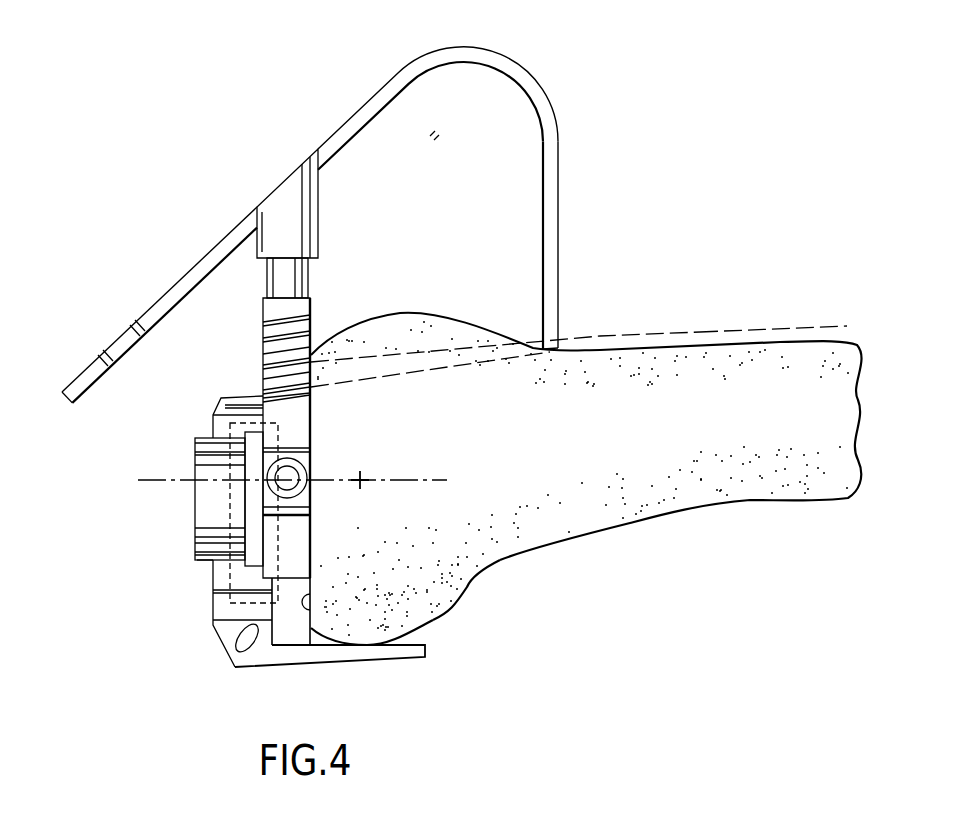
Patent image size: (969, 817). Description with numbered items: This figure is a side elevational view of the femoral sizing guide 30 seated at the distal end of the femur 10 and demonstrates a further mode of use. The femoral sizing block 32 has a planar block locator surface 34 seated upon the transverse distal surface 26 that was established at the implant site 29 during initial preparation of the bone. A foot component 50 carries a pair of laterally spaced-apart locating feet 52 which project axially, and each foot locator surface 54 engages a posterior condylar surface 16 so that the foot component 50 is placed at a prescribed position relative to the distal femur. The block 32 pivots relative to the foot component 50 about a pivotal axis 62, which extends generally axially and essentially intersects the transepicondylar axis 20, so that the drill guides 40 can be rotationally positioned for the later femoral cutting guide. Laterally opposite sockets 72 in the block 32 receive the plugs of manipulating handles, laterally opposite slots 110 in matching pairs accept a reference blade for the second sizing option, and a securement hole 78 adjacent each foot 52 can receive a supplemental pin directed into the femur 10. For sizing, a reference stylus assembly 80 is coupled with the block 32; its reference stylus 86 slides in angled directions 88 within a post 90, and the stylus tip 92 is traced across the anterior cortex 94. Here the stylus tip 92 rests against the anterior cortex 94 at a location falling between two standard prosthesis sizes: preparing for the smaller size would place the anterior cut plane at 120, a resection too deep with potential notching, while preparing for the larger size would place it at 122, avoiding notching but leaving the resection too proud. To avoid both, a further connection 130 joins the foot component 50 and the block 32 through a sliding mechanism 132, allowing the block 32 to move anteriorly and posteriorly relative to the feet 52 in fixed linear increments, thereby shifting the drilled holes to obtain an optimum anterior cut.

The femur 10 is at (800, 500).
The posterior condylar surfaces 16 is at (378, 648).
The transepicondylar axis 20 is at (361, 476).
The distal surface 26 is at (310, 598).
The implant site 29 is at (302, 638).
The femoral sizing guide 30 is at (190, 530).
The femoral sizing block 32 is at (314, 298).
The block locator surface 34 is at (350, 378).
The drill guides 40 is at (200, 495).
The foot component 50 is at (213, 632).
The locating feet 52 is at (308, 664).
The foot locator surface 54 is at (363, 643).
The pivotal axis 62 is at (153, 478).
The sockets 72 is at (295, 493).
The securement hole 78 is at (245, 652).
The reference stylus assembly 80 is at (524, 64).
The reference stylus 86 is at (558, 187).
The angled directions 88 is at (190, 257).
The post 90 is at (318, 215).
The stylus tip 92 is at (555, 352).
The anterior cortex 94 is at (560, 345).
The slots 110 is at (262, 338).
The plane of the anterior cut for the smaller size 120 is at (840, 329).
The plane of the anterior cut for the larger size 122 is at (655, 330).
The further connection 130 is at (222, 598).
The sliding mechanism 132 is at (230, 432).